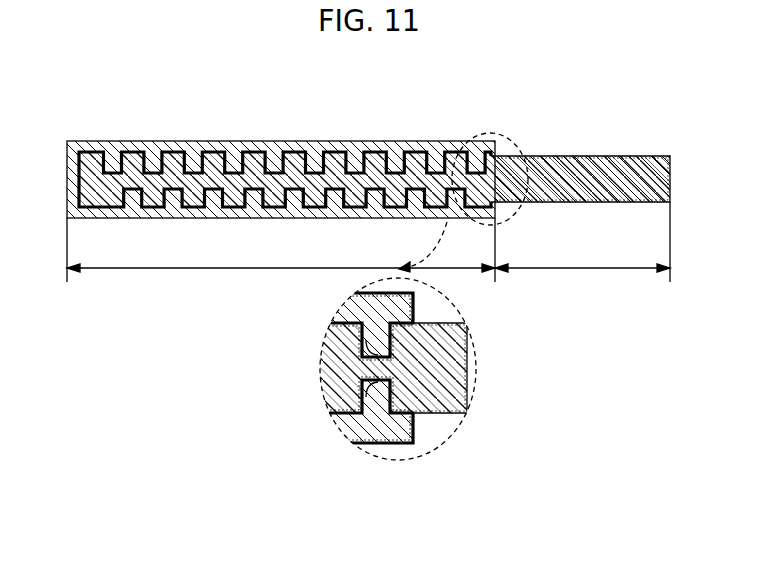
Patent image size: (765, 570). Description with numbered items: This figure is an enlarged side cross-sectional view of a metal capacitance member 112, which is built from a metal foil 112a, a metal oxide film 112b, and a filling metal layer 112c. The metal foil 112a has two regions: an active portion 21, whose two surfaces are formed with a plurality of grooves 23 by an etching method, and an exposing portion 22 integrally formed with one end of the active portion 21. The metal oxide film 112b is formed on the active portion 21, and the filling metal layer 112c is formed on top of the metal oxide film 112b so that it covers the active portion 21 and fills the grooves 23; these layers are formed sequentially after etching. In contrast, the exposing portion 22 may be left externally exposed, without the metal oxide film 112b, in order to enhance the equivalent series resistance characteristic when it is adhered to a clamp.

The metal capacitance member 112 is at (157, 137).
The metal foil 112a is at (543, 162).
The metal oxide film 112b is at (214, 158).
The filling metal layer 112c is at (352, 149).
The active portion 21 is at (281, 250).
The exposing portion 22 is at (582, 242).
The grooves 23 is at (376, 350).